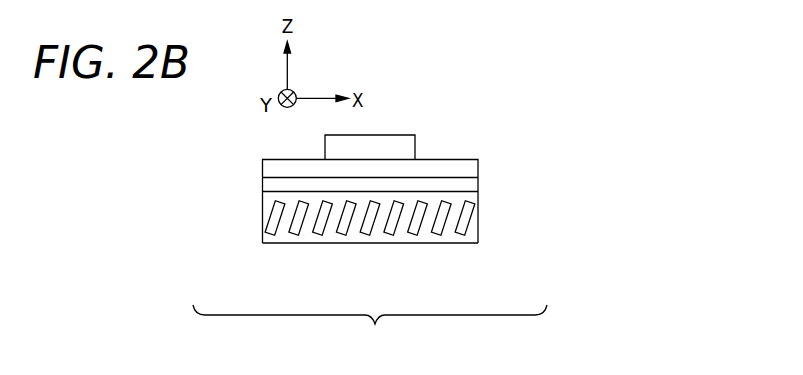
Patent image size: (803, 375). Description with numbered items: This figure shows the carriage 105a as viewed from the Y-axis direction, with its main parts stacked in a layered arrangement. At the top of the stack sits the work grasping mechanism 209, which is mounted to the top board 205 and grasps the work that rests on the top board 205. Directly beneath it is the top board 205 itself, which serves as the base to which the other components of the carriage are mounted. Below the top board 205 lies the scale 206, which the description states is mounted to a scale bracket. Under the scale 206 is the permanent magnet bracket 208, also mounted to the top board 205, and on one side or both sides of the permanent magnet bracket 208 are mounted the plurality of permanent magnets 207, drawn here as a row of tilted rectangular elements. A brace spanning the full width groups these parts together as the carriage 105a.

The light emitting device 105a is at (370, 329).
The top board 205 is at (472, 168).
The scale 206 is at (265, 190).
The permanent magnets 207 is at (465, 220).
The permanent magnet bracket 208 is at (352, 237).
The work grasping mechanism 209 is at (407, 140).